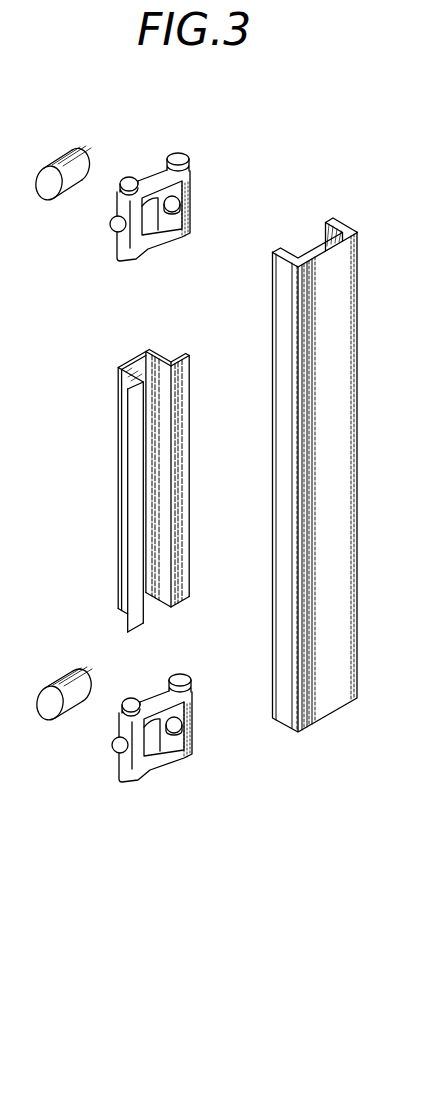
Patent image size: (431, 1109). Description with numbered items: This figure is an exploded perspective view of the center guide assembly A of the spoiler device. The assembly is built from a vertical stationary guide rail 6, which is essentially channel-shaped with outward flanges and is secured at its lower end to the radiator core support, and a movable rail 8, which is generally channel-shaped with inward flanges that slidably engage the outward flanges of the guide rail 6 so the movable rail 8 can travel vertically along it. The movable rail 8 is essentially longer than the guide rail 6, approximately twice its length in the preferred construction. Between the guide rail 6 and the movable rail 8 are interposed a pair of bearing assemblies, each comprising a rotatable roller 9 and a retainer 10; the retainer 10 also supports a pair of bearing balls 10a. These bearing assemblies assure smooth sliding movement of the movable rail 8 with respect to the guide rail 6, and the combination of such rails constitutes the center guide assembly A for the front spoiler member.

The guide rail 6 is at (188, 397).
The movable rail 8 is at (347, 297).
The rotatable roller 9 is at (92, 161).
The retainer 10 is at (171, 467).
The bearing ball 10a is at (175, 208).
The center guide assembly A is at (337, 447).